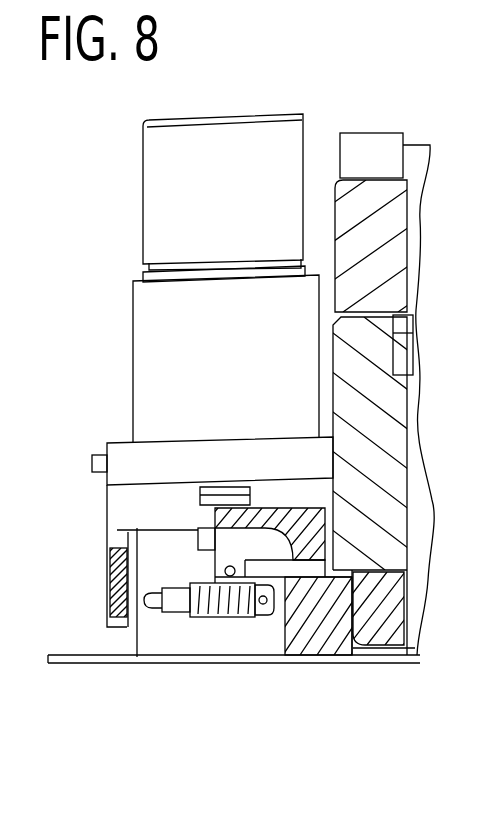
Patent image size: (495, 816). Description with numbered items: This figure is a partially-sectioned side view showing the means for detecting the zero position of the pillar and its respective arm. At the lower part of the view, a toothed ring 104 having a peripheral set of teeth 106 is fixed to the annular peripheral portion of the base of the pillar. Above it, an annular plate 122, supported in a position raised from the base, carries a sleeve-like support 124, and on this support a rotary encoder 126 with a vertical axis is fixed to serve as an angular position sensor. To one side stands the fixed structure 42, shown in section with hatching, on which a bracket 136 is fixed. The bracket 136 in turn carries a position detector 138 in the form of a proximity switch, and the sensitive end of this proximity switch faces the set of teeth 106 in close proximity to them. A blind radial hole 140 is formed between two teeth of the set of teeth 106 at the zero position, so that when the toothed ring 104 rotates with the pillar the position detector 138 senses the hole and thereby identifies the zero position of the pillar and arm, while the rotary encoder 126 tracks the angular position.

The rotary encoder 126 is at (152, 236).
The sleeve-like support 124 is at (148, 322).
The annular plate 122 is at (112, 452).
The bracket 136 is at (293, 510).
The fixed structure 42 is at (375, 413).
The position detector 138 is at (188, 617).
The blind radial hole 140 is at (250, 617).
The set of teeth 106 is at (280, 615).
The toothed ring 104 is at (331, 657).